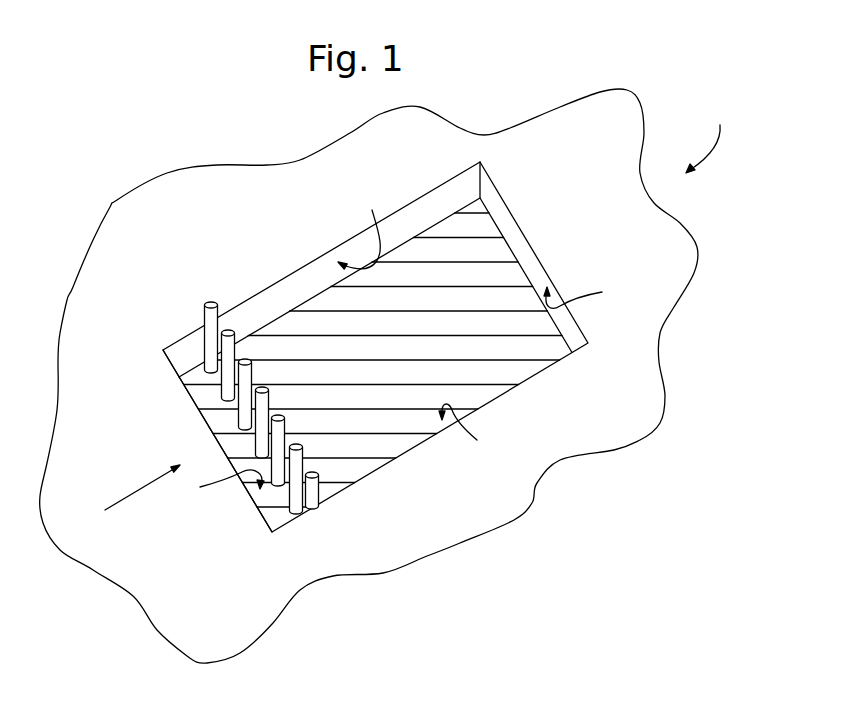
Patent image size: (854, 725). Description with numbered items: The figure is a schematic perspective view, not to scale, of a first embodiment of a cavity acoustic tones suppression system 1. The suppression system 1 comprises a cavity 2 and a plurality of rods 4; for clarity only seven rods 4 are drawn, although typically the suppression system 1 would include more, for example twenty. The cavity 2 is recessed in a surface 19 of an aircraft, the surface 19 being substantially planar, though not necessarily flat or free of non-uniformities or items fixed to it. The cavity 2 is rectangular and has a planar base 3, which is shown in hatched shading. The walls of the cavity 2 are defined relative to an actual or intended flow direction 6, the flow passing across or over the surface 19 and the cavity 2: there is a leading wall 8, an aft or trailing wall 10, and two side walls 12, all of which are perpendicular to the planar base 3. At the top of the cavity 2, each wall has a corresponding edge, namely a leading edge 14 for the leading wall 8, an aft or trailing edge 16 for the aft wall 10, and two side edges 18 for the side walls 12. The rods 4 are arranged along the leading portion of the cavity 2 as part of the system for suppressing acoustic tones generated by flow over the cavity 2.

The cavity acoustic tones suppression system 1 is at (706, 135).
The cavity 2 is at (475, 365).
The planar base 3 is at (450, 228).
The rods 4 is at (204, 340).
The flow direction 6 is at (130, 498).
The leading wall 8 is at (223, 485).
The aft wall 10 is at (587, 294).
The side walls 12 is at (419, 323).
The leading edge 14 is at (258, 508).
The aft edge 16 is at (527, 236).
The side edges 18 is at (275, 283).
The surface 19 is at (143, 210).